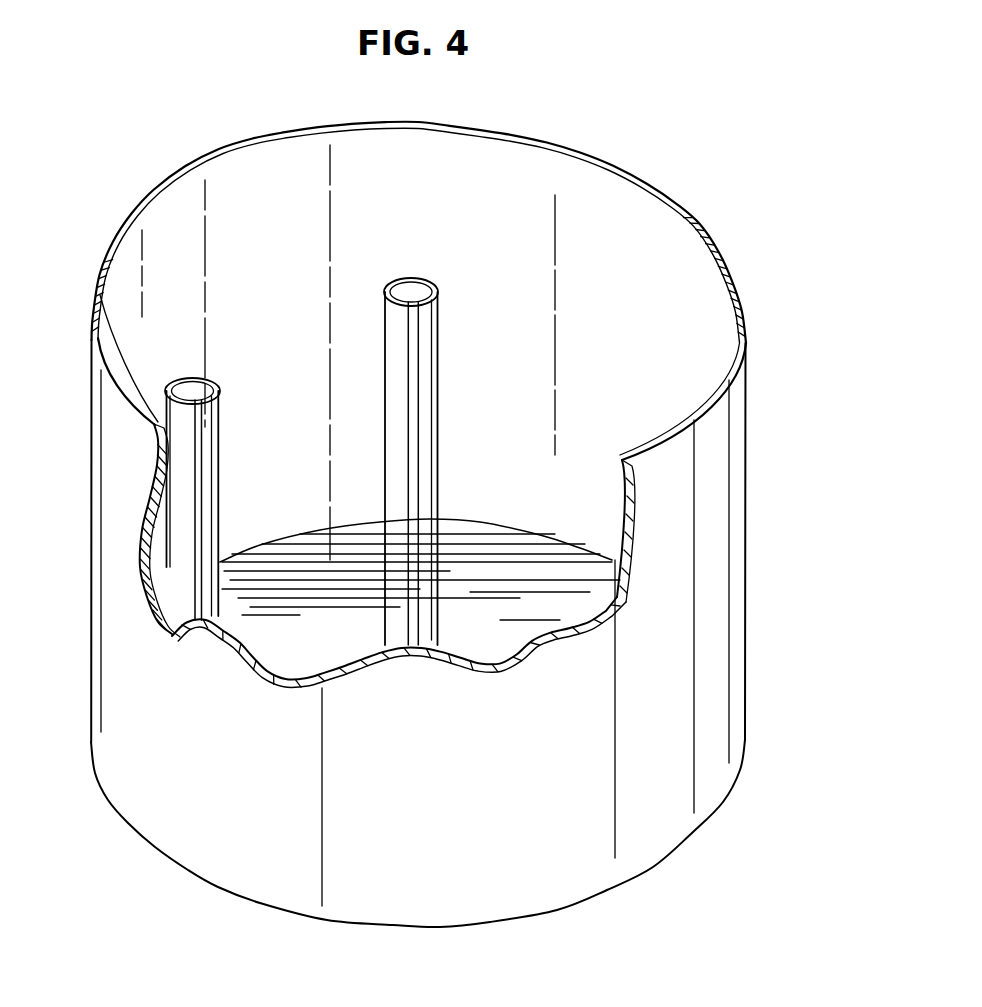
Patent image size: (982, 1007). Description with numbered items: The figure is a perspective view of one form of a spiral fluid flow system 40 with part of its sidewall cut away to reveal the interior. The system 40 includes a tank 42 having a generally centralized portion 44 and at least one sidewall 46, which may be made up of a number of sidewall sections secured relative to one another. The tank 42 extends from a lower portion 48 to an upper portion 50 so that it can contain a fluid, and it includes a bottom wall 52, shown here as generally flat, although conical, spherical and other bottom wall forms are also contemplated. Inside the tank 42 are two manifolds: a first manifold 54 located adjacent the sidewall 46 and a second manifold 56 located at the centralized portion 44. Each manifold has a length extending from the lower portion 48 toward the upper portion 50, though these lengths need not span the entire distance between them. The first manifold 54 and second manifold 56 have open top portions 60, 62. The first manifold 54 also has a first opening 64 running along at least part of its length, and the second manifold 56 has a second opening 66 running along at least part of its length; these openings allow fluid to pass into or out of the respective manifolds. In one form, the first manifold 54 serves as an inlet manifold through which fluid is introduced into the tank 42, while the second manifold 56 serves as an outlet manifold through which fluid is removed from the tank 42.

The fluid flow system 40 is at (657, 153).
The tank 42 is at (698, 214).
The centralized portion 44 is at (458, 308).
The sidewall 46 is at (177, 257).
The lower portion 48 is at (753, 724).
The upper portion 50 is at (750, 349).
The bottom wall 52 is at (547, 584).
The first manifold 54 is at (160, 410).
The second manifold 56 is at (392, 288).
The open top portion 60 is at (190, 387).
The open top portion 62 is at (418, 282).
The first opening 64 is at (195, 450).
The second opening 66 is at (408, 355).